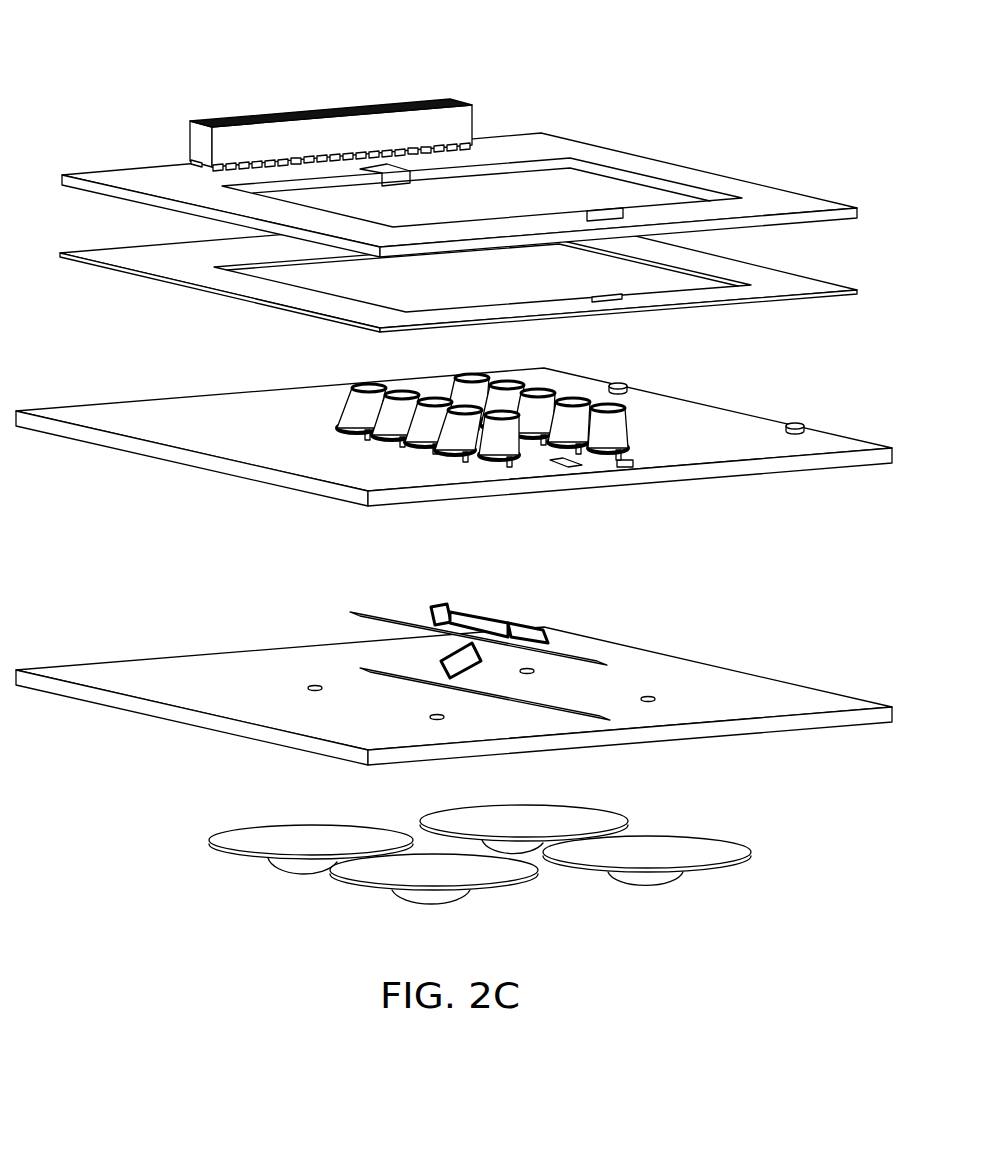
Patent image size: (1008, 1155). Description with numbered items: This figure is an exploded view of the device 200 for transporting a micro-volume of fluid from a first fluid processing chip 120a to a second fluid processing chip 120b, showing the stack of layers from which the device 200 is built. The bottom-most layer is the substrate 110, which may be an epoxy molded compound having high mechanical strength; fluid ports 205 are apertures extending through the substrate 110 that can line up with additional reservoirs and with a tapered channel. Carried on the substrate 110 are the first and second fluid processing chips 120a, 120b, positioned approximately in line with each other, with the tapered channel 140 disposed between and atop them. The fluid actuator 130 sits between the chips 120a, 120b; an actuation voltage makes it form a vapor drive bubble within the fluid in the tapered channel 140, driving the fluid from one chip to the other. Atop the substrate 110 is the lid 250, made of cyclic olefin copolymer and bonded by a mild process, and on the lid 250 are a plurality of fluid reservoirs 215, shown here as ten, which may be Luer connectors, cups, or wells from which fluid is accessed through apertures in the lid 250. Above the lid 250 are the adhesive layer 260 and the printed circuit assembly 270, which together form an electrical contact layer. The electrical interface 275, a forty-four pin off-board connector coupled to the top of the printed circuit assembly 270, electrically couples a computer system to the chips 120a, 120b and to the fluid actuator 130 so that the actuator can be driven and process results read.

The device 200 is at (112, 53).
The electrical interface 275 is at (332, 107).
The printed circuit assembly 270 is at (657, 162).
The adhesive layer 260 is at (800, 275).
The lid 250 is at (847, 437).
The fluid reservoir 215 is at (632, 428).
The substrate 110 is at (847, 697).
The fluid port 205 is at (308, 688).
The first fluid processing chip 120a is at (350, 612).
The second fluid processing chip 120b is at (577, 653).
The tapered channel 140 is at (493, 620).
The fluid actuator 130 is at (440, 662).